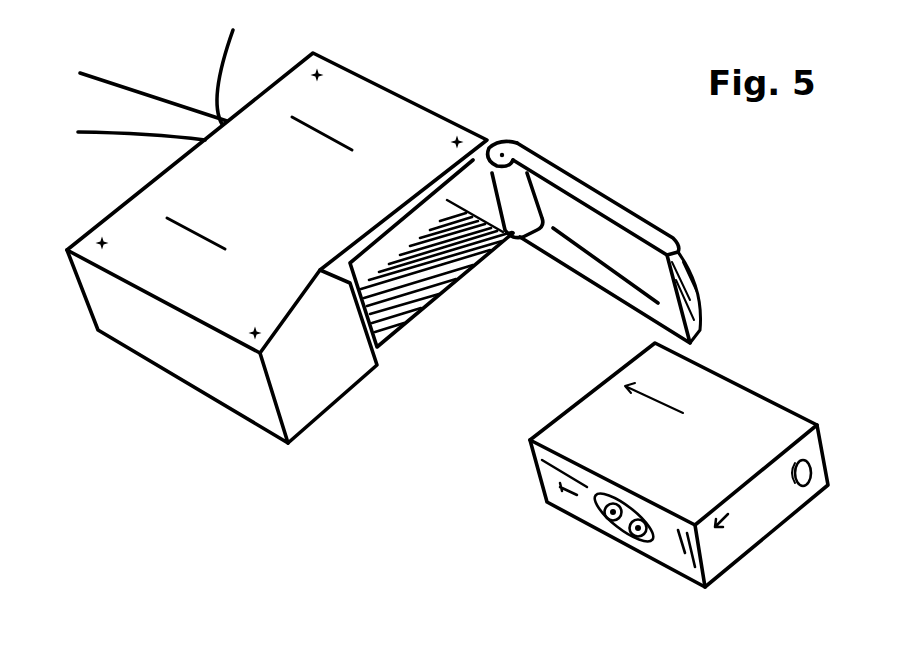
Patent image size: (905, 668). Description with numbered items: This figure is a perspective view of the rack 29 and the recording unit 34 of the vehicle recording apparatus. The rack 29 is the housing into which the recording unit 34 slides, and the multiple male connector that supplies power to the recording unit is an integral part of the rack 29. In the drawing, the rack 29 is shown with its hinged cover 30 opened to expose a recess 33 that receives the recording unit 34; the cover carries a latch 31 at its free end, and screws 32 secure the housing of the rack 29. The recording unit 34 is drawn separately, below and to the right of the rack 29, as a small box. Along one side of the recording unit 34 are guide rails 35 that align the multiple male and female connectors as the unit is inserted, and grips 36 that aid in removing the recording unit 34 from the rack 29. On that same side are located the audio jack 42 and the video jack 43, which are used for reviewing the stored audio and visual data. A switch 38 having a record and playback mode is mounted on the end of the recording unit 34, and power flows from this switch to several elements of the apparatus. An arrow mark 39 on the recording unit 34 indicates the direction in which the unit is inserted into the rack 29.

The rack 29 is at (188, 387).
The hinged lid 30 is at (612, 191).
The latch 31 is at (702, 285).
The screws 32 is at (101, 239).
The memory card recess 33 is at (474, 279).
The recording unit 34 is at (751, 384).
The guide rails 35 is at (548, 502).
The grips 36 is at (681, 549).
The switch 38 is at (810, 484).
The insertion arrow mark 39 is at (723, 529).
The audio jack 42 is at (610, 513).
The video jack 43 is at (633, 531).